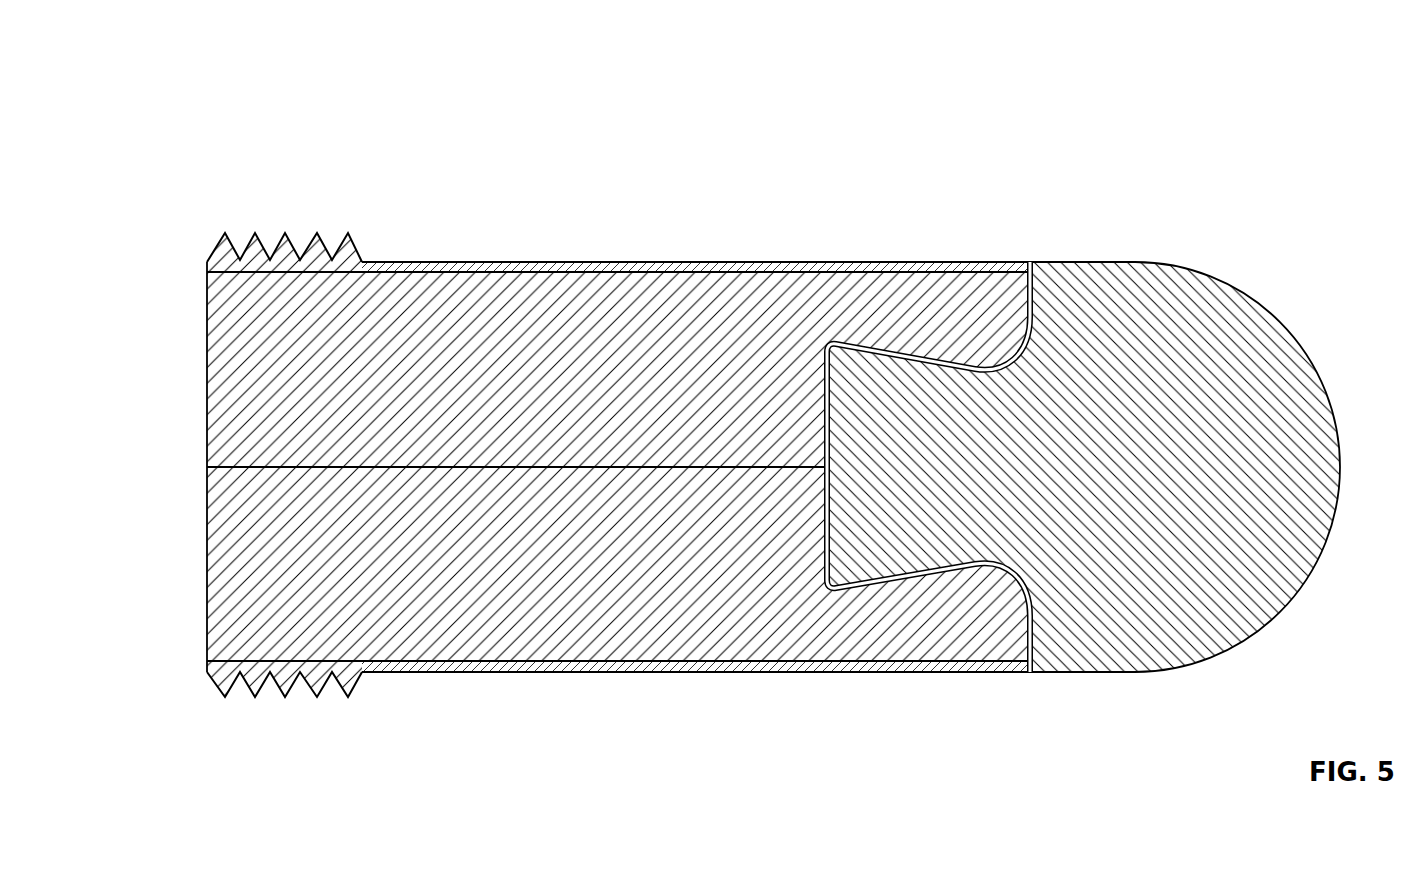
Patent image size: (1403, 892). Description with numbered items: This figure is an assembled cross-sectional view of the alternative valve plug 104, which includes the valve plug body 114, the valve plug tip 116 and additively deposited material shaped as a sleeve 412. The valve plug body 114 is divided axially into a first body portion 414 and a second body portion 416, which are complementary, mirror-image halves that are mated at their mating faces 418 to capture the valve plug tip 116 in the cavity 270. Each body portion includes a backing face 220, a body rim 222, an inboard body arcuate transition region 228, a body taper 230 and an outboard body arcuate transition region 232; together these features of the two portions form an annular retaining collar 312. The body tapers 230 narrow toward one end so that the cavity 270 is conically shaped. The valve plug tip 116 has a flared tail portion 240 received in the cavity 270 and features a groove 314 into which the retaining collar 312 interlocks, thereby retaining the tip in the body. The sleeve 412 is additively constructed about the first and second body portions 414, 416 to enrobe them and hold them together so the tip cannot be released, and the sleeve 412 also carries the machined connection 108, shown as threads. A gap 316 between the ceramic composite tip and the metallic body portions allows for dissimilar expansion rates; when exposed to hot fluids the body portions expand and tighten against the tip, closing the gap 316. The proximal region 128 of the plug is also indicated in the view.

The valve plug 104 is at (248, 143).
The machined connection 108 is at (300, 258).
The valve plug body 114 is at (585, 595).
The valve plug tip 116 is at (1299, 482).
The proximal end 128 is at (190, 421).
The backing face 220 is at (825, 389).
The body rim 222 is at (1030, 303).
The inboard body arcuate transition region 228 is at (827, 338).
The body taper 230 is at (917, 358).
The outboard body arcuate transition region 232 is at (998, 357).
The tail portion 240 is at (887, 513).
The cavity 270 is at (955, 490).
The retaining collar 312 is at (935, 600).
The groove 314 is at (1018, 367).
The gap 316 is at (1029, 259).
The sleeve 412 is at (601, 267).
The first body portion 414 is at (572, 418).
The second body portion 416 is at (535, 512).
The mating face 418 is at (489, 467).